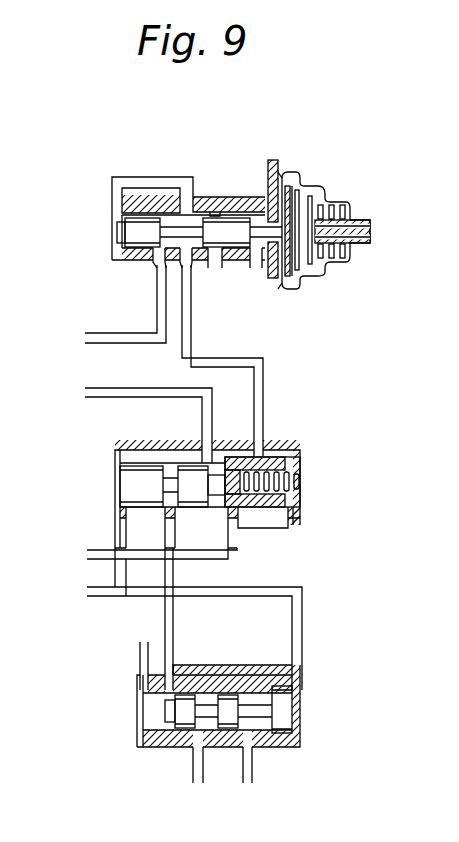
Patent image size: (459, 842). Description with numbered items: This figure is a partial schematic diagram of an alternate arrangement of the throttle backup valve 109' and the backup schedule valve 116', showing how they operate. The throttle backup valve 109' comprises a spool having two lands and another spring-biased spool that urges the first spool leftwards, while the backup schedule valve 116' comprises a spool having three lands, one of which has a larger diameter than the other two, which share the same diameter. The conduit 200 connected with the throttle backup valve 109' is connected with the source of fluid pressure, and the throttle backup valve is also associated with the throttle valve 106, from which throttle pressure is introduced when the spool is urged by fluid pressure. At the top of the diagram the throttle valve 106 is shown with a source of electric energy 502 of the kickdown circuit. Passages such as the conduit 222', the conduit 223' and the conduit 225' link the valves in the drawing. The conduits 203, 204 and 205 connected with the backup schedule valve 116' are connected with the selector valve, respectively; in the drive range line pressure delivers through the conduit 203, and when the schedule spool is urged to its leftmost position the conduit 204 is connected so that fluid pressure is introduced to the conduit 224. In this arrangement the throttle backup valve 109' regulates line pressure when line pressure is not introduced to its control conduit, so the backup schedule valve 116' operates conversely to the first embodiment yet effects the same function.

The throttle valve 106 is at (103, 226).
The source of electric energy 502 is at (392, 179).
The conduit 200 is at (86, 343).
The fluid passage 222' is at (235, 352).
The throttle backup valve 109' is at (245, 494).
The fluid passage 223' is at (131, 557).
The fluid passage 225' is at (167, 619).
The conduit 203 is at (144, 640).
The conduit 224 is at (174, 632).
The backup schedule valve 116' is at (255, 706).
The conduit 204 is at (196, 785).
The conduit 205 is at (248, 785).